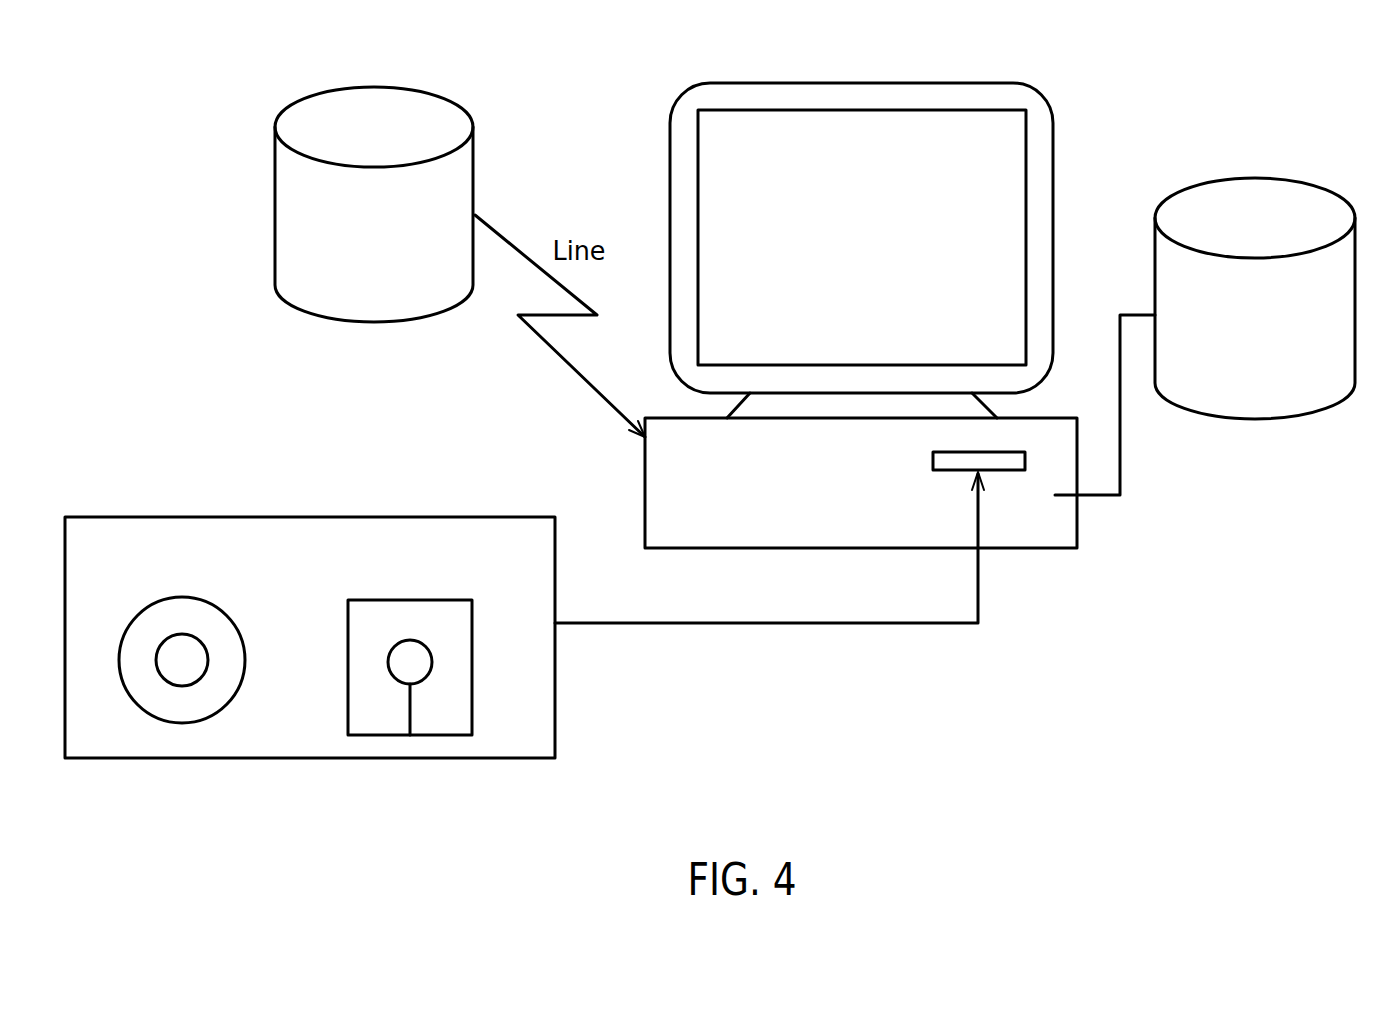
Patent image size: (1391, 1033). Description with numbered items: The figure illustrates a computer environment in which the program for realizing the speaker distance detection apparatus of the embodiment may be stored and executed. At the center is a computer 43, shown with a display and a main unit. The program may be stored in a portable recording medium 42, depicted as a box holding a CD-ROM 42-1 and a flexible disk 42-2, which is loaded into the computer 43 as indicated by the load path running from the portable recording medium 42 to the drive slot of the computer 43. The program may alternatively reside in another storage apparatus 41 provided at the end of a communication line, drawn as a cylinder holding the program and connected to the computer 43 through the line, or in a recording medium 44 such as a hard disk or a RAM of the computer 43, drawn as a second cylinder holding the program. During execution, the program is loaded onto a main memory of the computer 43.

The storage apparatus 41 is at (437, 98).
The portable recording medium 42 is at (524, 599).
The CD-ROM 42-1 is at (182, 623).
The flexible disk 42-2 is at (410, 632).
The computer 43 is at (862, 83).
The recording medium 44 is at (1317, 192).